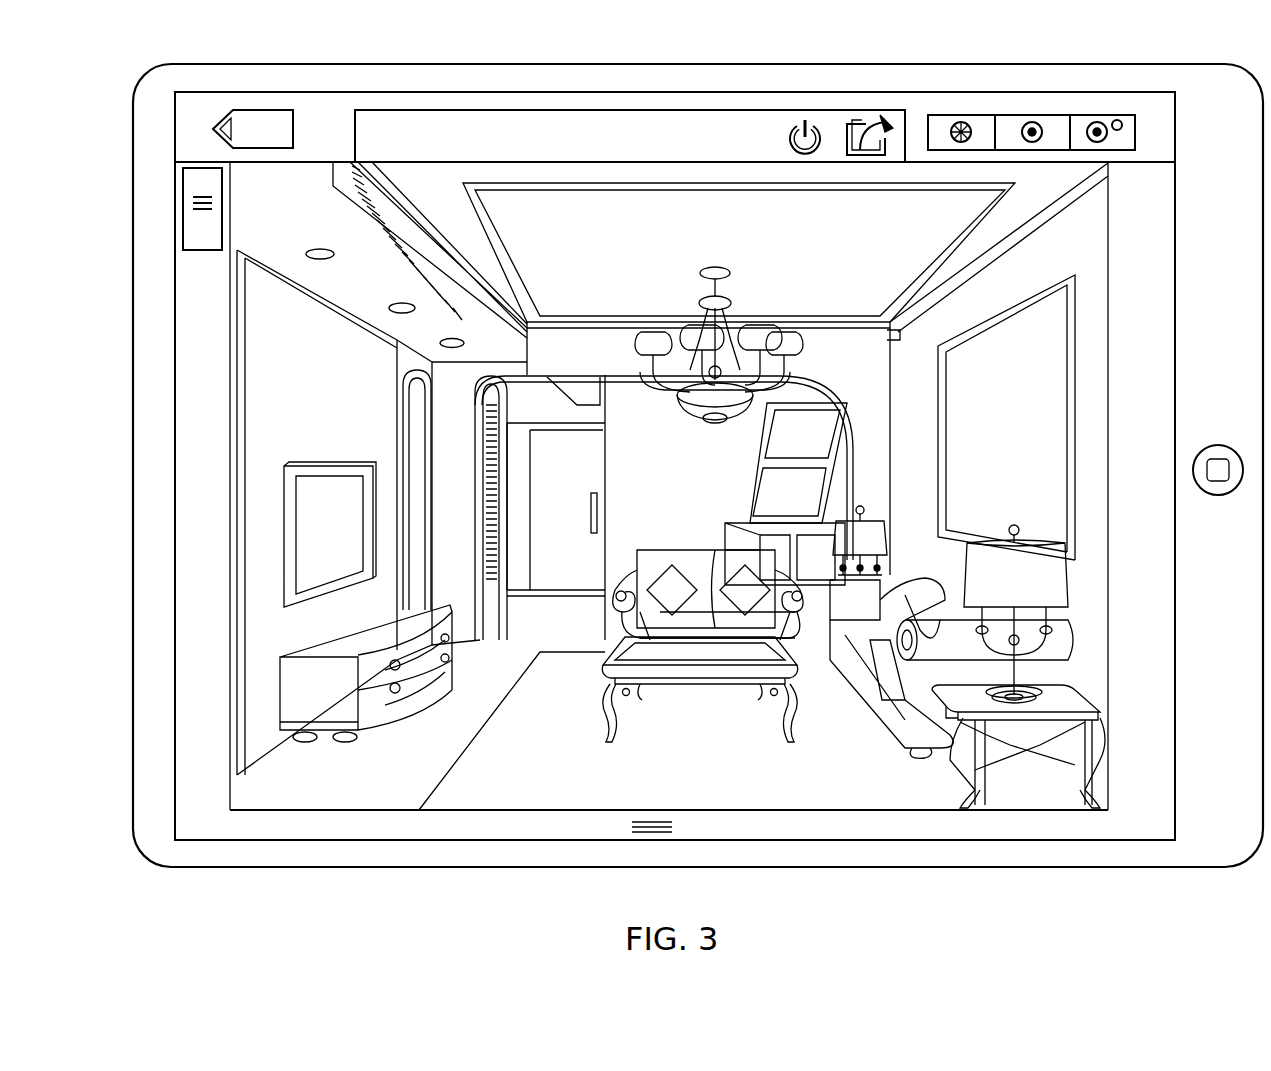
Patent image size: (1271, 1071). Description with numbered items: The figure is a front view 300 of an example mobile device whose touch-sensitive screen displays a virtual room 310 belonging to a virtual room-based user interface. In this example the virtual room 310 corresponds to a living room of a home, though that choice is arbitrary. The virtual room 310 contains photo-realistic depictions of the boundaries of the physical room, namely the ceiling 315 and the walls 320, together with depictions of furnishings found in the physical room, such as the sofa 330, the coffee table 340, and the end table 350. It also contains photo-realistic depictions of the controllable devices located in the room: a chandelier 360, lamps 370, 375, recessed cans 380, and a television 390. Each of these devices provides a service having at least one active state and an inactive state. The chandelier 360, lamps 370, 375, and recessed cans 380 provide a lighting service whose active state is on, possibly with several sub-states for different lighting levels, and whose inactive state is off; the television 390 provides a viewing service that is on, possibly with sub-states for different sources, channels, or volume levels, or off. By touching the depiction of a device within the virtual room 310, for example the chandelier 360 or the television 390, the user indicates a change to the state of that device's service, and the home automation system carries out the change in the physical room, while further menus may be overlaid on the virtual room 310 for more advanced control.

The front view 300 is at (118, 72).
The virtual room 310 is at (1110, 222).
The ceiling 315 is at (1060, 193).
The walls 320 is at (300, 330).
The sofa 330 is at (878, 712).
The coffee table 340 is at (707, 688).
The end table 350 is at (955, 773).
The chandelier 360 is at (825, 363).
The lamp 370 is at (1080, 578).
The lamp 375 is at (875, 496).
The recessed cans 380 is at (342, 270).
The television 390 is at (345, 492).